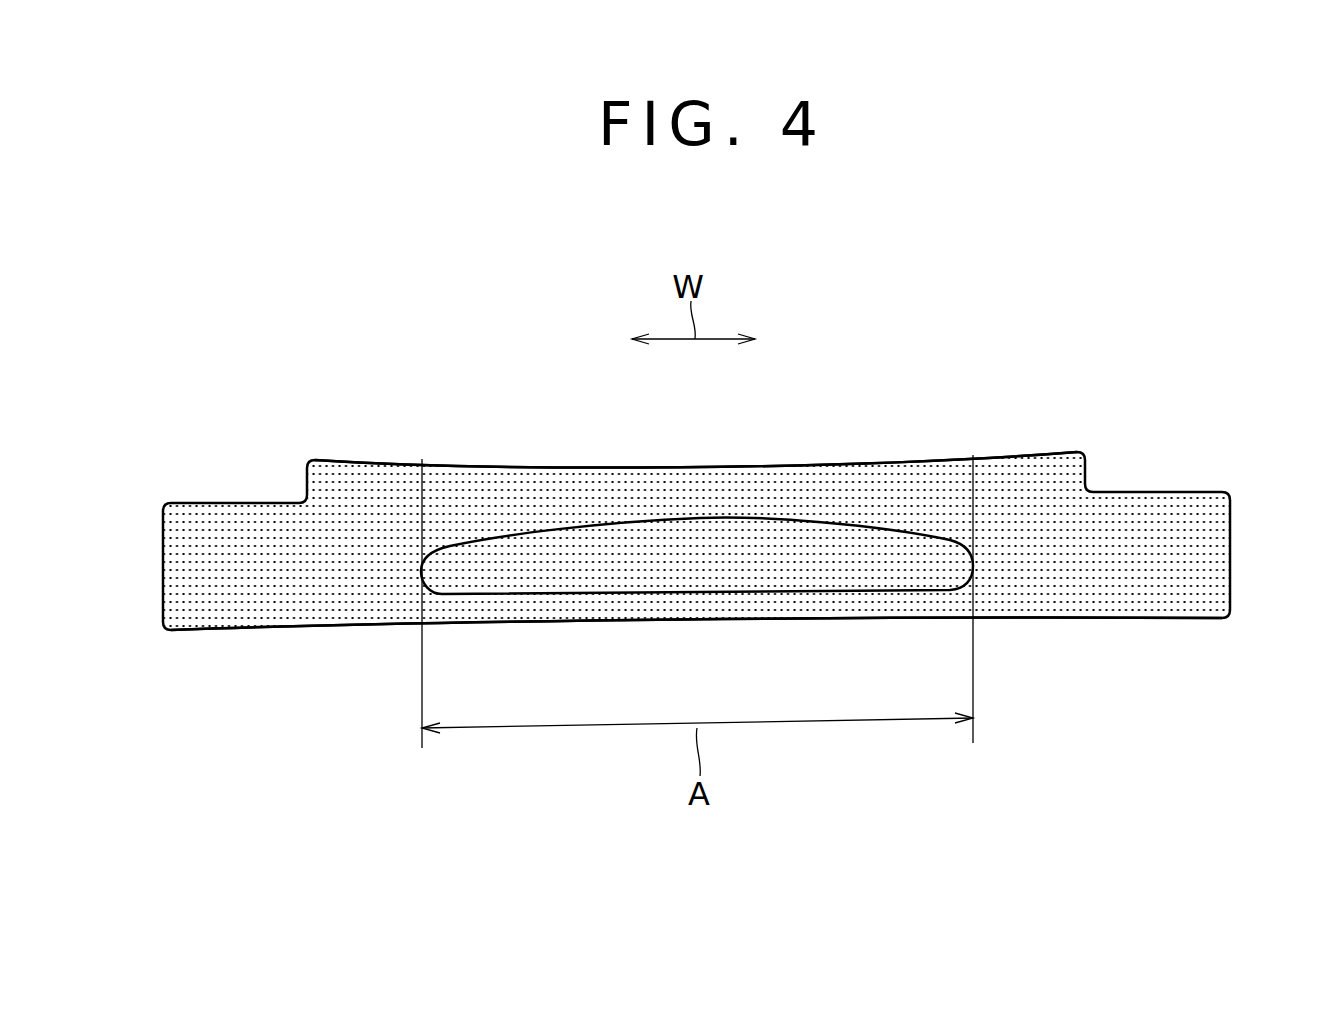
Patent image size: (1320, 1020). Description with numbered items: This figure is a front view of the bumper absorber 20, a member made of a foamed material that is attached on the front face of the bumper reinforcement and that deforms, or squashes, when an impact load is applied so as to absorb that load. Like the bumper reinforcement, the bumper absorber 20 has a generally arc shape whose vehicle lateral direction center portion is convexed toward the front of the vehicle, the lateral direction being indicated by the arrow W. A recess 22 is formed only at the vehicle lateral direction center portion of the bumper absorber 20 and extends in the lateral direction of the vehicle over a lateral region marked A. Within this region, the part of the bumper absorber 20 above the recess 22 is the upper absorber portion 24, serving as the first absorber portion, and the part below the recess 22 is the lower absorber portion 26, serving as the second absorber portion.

The bumper absorber 20 is at (1071, 451).
The recess 22 is at (862, 585).
The upper absorber portion 24 is at (676, 490).
The lower absorber portion 26 is at (677, 610).